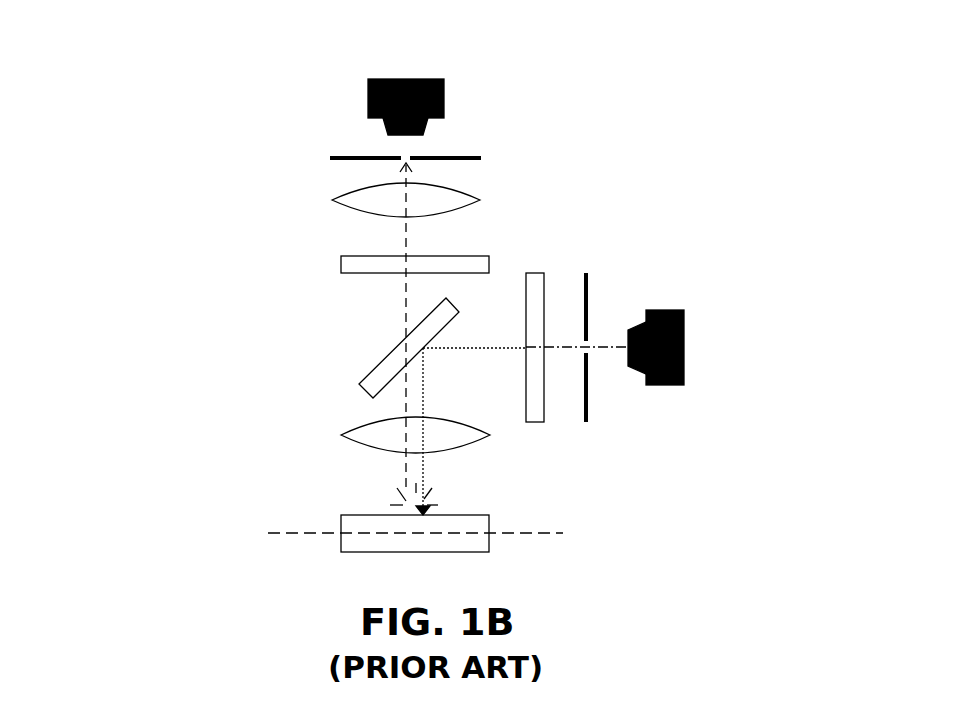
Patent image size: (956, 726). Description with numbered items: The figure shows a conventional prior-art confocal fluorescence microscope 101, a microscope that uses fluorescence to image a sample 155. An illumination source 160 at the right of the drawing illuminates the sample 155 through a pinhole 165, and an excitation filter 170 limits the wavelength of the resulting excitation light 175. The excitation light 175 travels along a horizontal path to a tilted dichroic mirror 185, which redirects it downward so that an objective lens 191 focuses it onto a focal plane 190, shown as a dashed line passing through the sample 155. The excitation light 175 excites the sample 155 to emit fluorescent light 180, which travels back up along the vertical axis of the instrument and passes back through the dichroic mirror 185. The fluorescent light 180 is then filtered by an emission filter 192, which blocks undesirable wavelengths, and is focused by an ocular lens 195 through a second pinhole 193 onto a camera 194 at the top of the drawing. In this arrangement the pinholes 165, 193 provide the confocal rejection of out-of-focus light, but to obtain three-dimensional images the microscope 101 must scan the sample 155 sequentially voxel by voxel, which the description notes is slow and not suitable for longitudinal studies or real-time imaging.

The confocal fluorescence microscope 101 is at (150, 118).
The sample 155 is at (341, 520).
The illumination source 160 is at (655, 310).
The pinhole 165 is at (602, 367).
The excitation filter 170 is at (535, 273).
The excitation light 175 is at (447, 349).
The fluorescent light 180 is at (404, 297).
The dichroic mirror 185 is at (372, 390).
The focal plane 190 is at (540, 533).
The objective lens 191 is at (472, 443).
The emission filter 192 is at (341, 262).
The pinhole 193 is at (416, 151).
The camera 194 is at (368, 98).
The ocular lens 195 is at (340, 196).